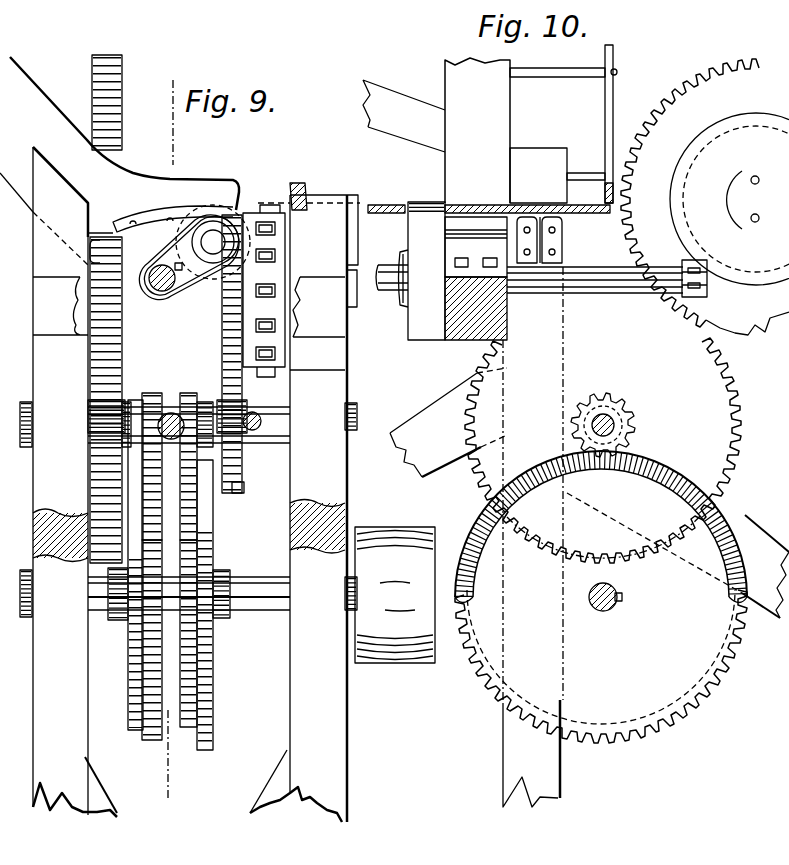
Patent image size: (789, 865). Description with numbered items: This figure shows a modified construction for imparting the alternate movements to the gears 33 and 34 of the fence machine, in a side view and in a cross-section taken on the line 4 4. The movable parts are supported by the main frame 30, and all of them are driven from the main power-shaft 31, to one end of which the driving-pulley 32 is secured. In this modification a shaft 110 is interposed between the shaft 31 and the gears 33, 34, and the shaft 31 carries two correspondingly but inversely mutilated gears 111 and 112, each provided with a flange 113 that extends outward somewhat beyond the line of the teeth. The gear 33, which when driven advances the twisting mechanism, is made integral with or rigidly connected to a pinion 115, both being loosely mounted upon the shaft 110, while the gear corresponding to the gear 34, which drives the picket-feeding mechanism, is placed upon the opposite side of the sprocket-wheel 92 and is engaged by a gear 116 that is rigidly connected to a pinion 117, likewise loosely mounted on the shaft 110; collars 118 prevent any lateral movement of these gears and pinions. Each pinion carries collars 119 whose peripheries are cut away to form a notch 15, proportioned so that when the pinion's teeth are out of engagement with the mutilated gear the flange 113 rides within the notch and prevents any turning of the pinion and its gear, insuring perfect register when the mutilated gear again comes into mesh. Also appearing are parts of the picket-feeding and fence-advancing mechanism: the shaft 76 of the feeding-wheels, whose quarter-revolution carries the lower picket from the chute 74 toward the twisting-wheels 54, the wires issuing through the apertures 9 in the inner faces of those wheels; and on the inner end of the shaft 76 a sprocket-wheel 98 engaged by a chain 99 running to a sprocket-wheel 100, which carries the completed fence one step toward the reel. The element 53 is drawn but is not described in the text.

In FIG. 9, the chute 74 is at (119, 144).
In FIG. 9, the gear 53 is at (122, 72).
In FIG. 10, the gear 53 is at (705, 197).
In FIG. 9, the line 4 4 is at (168, 442).
In FIG. 9, the gear 33 is at (122, 340).
In FIG. 10, the gear 33 is at (733, 413).
In FIG. 9, the sprocket-wheel 98 is at (178, 268).
In FIG. 9, the sprocket-wheel 100 is at (213, 242).
In FIG. 9, the sprocket-wheel 92 is at (264, 291).
In FIG. 9, the shaft 76 is at (163, 293).
In FIG. 10, the shaft 76 is at (603, 263).
In FIG. 9, the chain 99 is at (188, 290).
In FIG. 9, the gear 34 is at (222, 315).
In FIG. 9, the pinion 115 is at (153, 393).
In FIG. 10, the pinion 115 is at (613, 401).
In FIG. 9, the collars 119 is at (137, 403).
In FIG. 9, the collars 118 is at (171, 412).
In FIG. 9, the pinion 117 is at (190, 393).
In FIG. 9, the shaft 110 is at (277, 437).
In FIG. 10, the shaft 110 is at (615, 426).
In FIG. 9, the gear 116 is at (240, 482).
In FIG. 9, the flange 113 is at (204, 757).
In FIG. 10, the flange 113 is at (740, 523).
In FIG. 9, the main power-shaft 31 is at (188, 594).
In FIG. 10, the main power-shaft 31 is at (603, 612).
In FIG. 9, the mutilated gear 112 is at (165, 642).
In FIG. 10, the mutilated gear 112 is at (702, 680).
In FIG. 9, the mutilated gear 111 is at (188, 612).
In FIG. 9, the main frame 30 is at (304, 508).
In FIG. 10, the main frame 30 is at (533, 537).
In FIG. 9, the driving-pulley 32 is at (395, 595).
In FIG. 10, the twisting-wheels 54 is at (729, 199).
In FIG. 10, the apertures 9 is at (758, 207).
In FIG. 10, the notch 15 is at (632, 444).